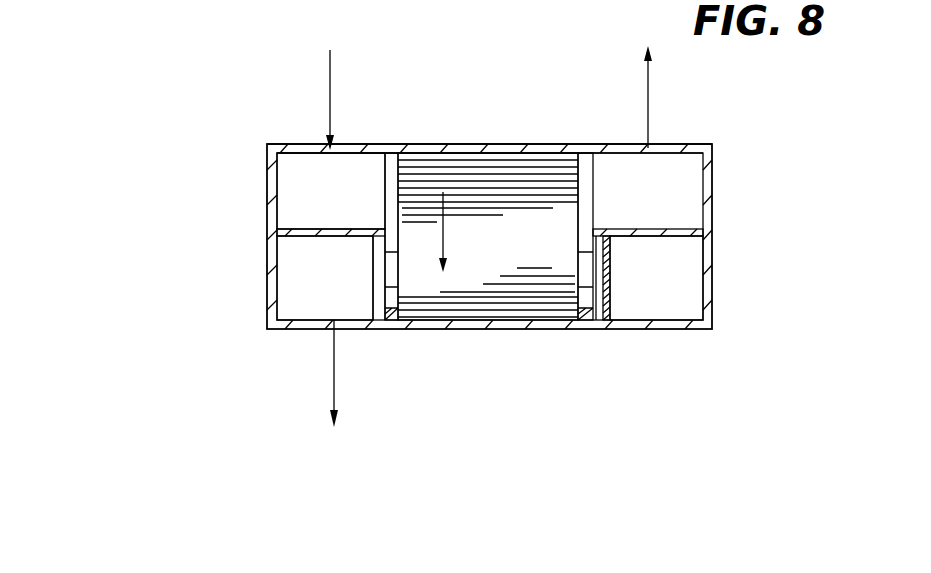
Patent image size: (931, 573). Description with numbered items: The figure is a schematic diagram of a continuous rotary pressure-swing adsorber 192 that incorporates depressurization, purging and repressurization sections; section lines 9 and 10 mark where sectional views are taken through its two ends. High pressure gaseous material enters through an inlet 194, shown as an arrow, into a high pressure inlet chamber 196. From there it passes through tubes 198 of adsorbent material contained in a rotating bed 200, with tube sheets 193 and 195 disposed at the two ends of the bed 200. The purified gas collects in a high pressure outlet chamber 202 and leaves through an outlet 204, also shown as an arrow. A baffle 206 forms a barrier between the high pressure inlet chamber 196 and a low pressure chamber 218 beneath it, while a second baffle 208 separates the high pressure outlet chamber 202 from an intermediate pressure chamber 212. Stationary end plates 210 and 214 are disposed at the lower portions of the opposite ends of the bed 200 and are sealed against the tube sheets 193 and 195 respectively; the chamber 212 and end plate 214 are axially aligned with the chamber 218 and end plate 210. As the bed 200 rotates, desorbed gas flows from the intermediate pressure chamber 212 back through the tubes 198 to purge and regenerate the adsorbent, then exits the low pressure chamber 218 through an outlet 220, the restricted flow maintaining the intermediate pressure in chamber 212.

The adsorber 192 is at (716, 180).
The tube sheet 193 is at (392, 156).
The inlet 194 is at (330, 73).
The tube sheet 195 is at (598, 133).
The high pressure inlet chamber 196 is at (352, 158).
The tubes 198 is at (419, 168).
The rotating bed 200 is at (475, 226).
The high pressure outlet chamber 202 is at (703, 148).
The outlet 204 is at (650, 112).
The baffle 206 is at (286, 240).
The baffle 208 is at (684, 246).
The end plate 210 is at (372, 307).
The intermediate pressure chamber 212 is at (688, 299).
The end plate 214 is at (612, 308).
The low pressure chamber 218 is at (292, 278).
The outlet 220 is at (336, 385).
The section line 9- 9 is at (313, 120).
The section line 10- 10 is at (625, 115).